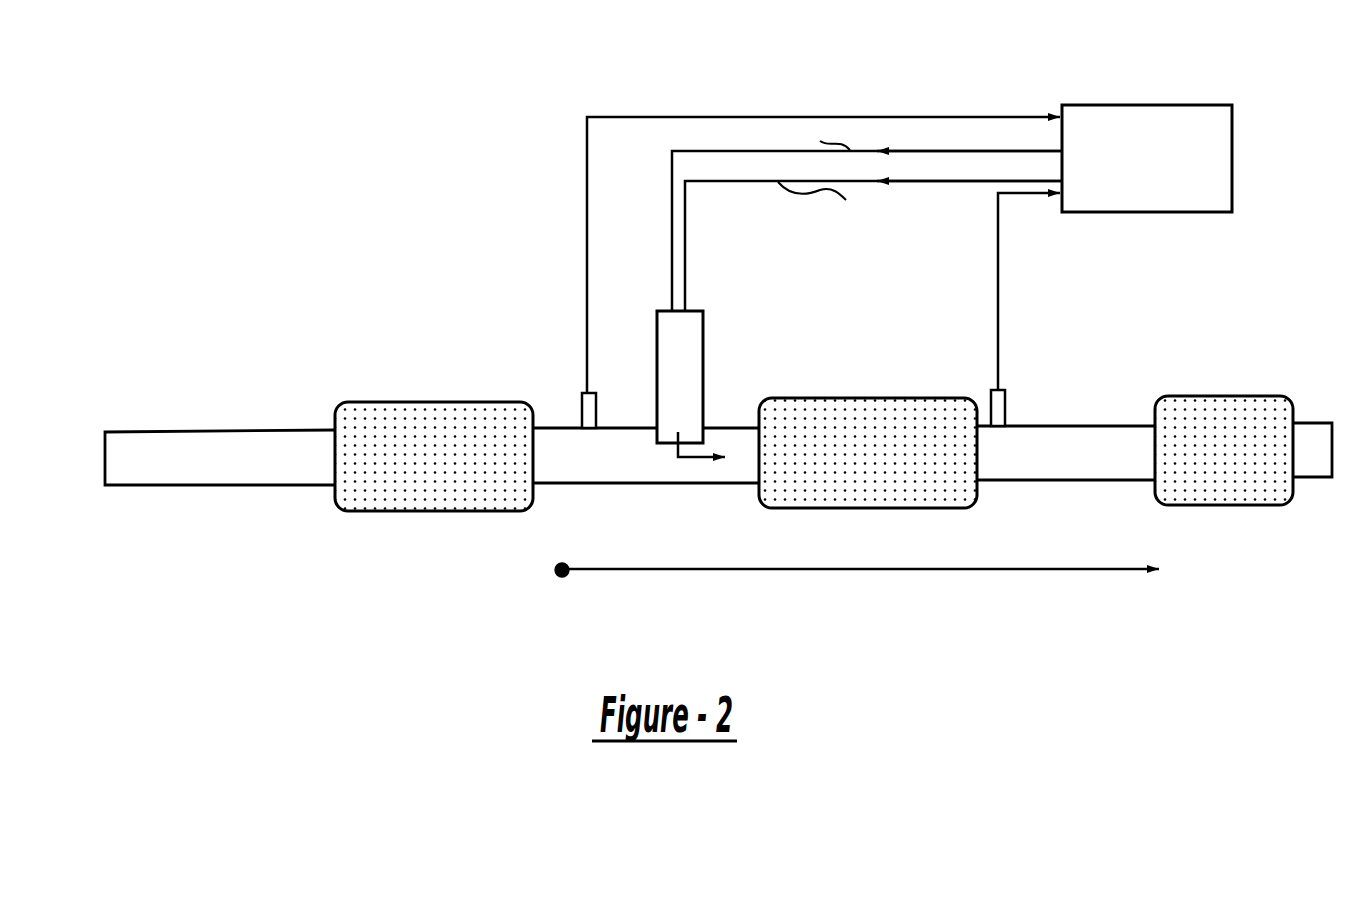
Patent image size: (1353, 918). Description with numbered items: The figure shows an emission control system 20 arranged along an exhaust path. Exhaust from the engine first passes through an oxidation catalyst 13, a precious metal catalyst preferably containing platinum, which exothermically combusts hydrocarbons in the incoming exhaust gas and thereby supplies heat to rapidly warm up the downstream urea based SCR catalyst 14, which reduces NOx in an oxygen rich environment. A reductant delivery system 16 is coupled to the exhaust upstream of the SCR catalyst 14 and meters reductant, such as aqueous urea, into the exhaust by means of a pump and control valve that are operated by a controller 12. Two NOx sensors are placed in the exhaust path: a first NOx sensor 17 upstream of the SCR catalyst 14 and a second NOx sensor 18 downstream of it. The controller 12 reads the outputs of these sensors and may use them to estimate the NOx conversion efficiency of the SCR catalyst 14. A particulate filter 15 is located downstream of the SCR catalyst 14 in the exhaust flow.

The controller 12 is at (1190, 105).
The oxidation catalyst 13 is at (448, 512).
The urea based SCR catalyst 14 is at (900, 510).
The particulate filter 15 is at (1252, 506).
The reductant delivery system 16 is at (703, 345).
The NOx1 sensor 17 is at (582, 411).
The NOx2 sensor 18 is at (1005, 405).
The emission control system 20 is at (291, 189).